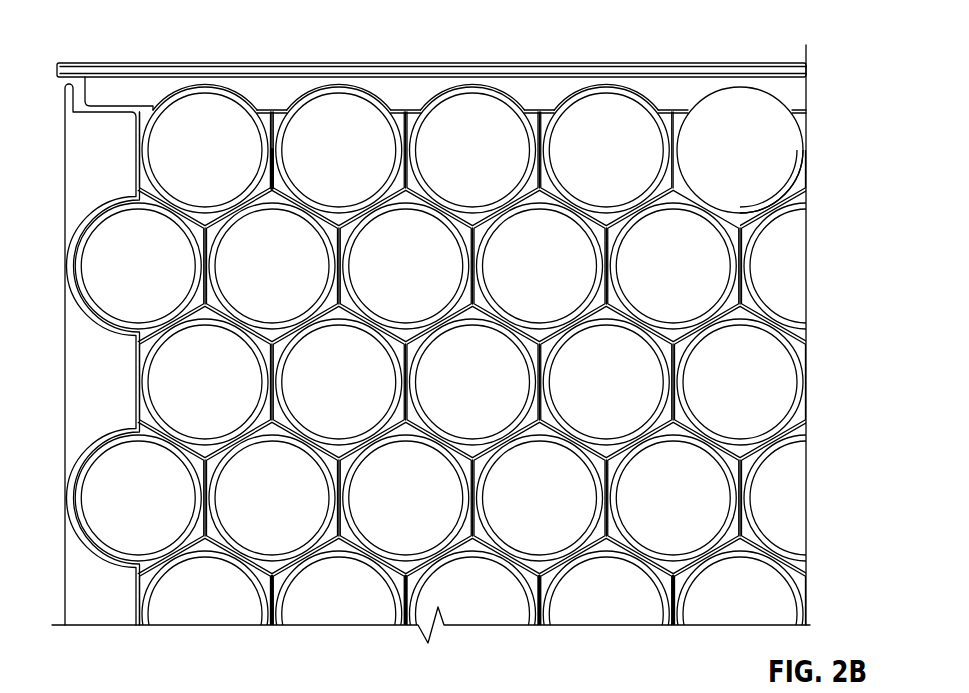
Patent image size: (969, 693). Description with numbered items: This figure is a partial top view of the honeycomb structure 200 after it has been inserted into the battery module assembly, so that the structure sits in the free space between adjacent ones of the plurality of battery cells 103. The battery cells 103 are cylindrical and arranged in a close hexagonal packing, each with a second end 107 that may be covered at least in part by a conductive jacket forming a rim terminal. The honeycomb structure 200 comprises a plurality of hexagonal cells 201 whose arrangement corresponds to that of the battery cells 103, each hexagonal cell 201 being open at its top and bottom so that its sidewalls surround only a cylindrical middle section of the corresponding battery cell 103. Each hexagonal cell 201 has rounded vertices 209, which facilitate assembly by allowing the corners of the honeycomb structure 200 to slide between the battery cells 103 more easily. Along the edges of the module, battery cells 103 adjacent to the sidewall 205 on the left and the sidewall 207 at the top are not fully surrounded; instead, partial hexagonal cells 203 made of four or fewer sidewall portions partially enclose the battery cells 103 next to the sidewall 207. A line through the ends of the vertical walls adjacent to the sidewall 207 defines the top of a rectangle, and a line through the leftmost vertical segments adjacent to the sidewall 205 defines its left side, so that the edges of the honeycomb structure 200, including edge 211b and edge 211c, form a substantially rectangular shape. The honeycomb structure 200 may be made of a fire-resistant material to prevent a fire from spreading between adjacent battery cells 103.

The battery cell 103 is at (795, 143).
The second end 107 is at (782, 119).
The honeycomb structure 200 is at (827, 418).
The hexagonal cell 201 is at (824, 349).
The partial hexagonal cell 203 is at (276, 161).
The sidewall 205 is at (84, 163).
The sidewall 207 is at (672, 99).
The rounded vertex 209 is at (807, 190).
The edge 211b is at (822, 146).
The edge 211c is at (267, 650).